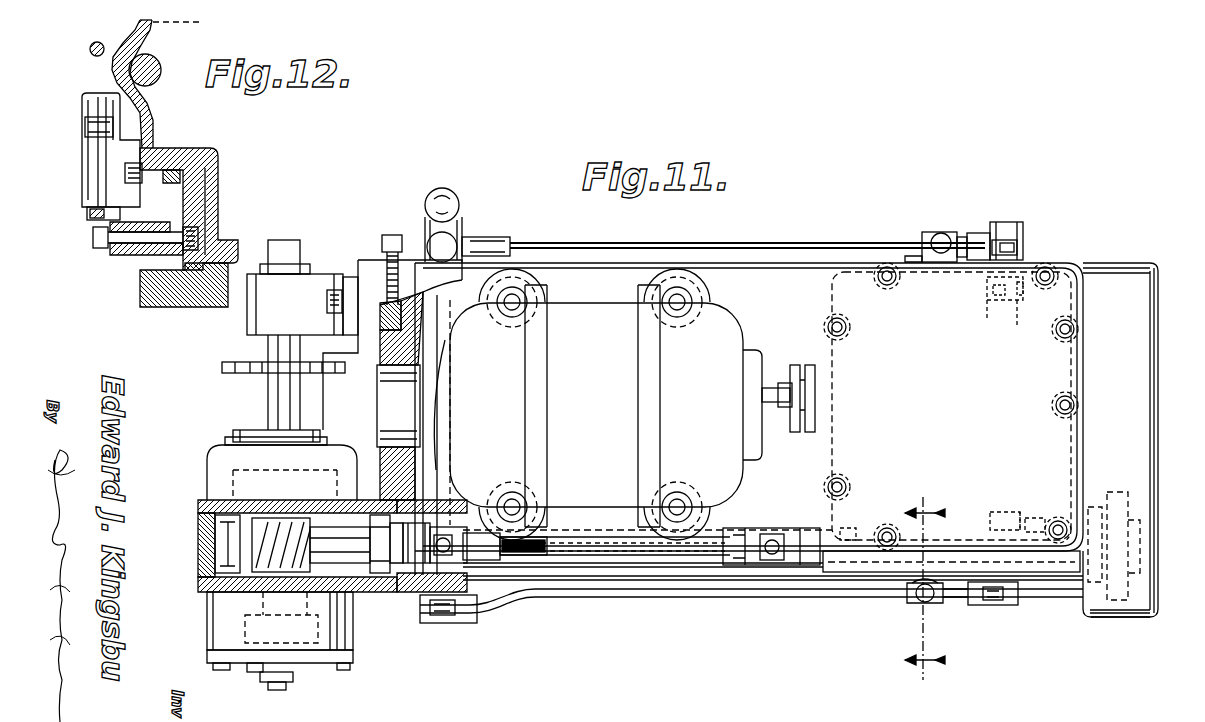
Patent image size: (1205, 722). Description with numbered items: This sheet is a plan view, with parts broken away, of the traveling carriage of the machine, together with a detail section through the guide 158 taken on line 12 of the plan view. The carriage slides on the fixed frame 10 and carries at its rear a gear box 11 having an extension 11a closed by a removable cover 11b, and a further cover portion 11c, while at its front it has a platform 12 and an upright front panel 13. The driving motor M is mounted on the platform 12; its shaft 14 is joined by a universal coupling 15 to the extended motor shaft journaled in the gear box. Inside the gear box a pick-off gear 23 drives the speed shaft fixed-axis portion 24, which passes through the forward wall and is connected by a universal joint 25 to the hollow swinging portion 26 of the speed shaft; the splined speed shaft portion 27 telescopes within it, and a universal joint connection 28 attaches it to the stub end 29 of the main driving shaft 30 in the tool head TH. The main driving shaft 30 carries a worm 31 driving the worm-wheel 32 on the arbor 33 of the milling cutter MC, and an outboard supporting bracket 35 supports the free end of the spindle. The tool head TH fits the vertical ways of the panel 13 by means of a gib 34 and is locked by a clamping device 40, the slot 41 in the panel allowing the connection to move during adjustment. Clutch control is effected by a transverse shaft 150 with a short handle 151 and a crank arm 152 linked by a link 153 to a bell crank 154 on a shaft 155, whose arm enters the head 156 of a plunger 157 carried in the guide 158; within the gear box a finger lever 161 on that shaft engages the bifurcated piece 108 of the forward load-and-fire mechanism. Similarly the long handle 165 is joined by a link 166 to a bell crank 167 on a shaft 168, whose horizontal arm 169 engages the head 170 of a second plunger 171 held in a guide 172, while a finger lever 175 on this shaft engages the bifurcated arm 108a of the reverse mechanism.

In FIG. 12, the fixed frame 10 is at (185, 285).
In FIG. 12, the gear box 11 is at (220, 160).
In FIG. 11, the extension of the gear box 11a is at (1118, 286).
In FIG. 11, the removable cover 11b is at (1150, 478).
In FIG. 11, the cover plate 11c is at (1048, 436).
In FIG. 11, the platform 12 is at (925, 590).
In FIG. 11, the upright front panel 13 is at (418, 278).
In FIG. 11, the shaft 14 is at (769, 412).
In FIG. 11, the universal coupling 15 is at (808, 366).
In FIG. 11, the pick-off gear 23 is at (1112, 614).
In FIG. 12, the speed shaft fixed-axis portion 24 is at (153, 83).
In FIG. 11, the speed shaft fixed-axis portion 24 is at (850, 535).
In FIG. 11, the universal joint 25 is at (783, 566).
In FIG. 11, the hollow swinging portion of the speed shaft 26 is at (612, 535).
In FIG. 11, the speed shaft portion 27 is at (547, 535).
In FIG. 11, the universal joint connection 28 is at (470, 580).
In FIG. 11, the stub end 29 is at (386, 575).
In FIG. 11, the main driving shaft 30 is at (362, 566).
In FIG. 11, the worm 31 is at (262, 560).
In FIG. 11, the worm-wheel 32 is at (199, 556).
In FIG. 11, the arbor 33 is at (270, 394).
In FIG. 11, the gib 34 is at (388, 303).
In FIG. 11, the outboard supporting bracket 35 is at (272, 306).
In FIG. 11, the clamping device 40 is at (390, 234).
In FIG. 11, the slot 41 is at (414, 578).
In FIG. 11, the bifurcated piece 108 is at (1020, 510).
In FIG. 11, the bifurcated arm 108a is at (987, 310).
In FIG. 11, the transverse shaft 150 is at (435, 472).
In FIG. 11, the short handle 151 is at (450, 200).
In FIG. 11, the crank arm 152 is at (440, 623).
In FIG. 12, the link 153 is at (90, 49).
In FIG. 11, the link 153 is at (572, 594).
In FIG. 11, the bell crank 154 is at (1015, 606).
In FIG. 11, the shaft 155 is at (1008, 512).
In FIG. 12, the head 156 is at (100, 120).
In FIG. 11, the head 156 is at (942, 605).
In FIG. 12, the plunger 157 is at (95, 152).
In FIG. 11, the plunger 157 is at (918, 606).
In FIG. 12, the guide 158 is at (85, 183).
In FIG. 11, the guide 158 is at (912, 603).
In FIG. 11, the finger lever 161 is at (1035, 516).
In FIG. 11, the long handle 165 is at (458, 242).
In FIG. 11, the link 166 is at (680, 247).
In FIG. 11, the bell crank 167 is at (1016, 248).
In FIG. 11, the shaft 168 is at (1005, 222).
In FIG. 11, the horizontal arm 169 is at (980, 238).
In FIG. 11, the head 170 is at (962, 237).
In FIG. 11, the second plunger 171 is at (943, 236).
In FIG. 11, the guide 172 is at (924, 236).
In FIG. 11, the finger lever 175 is at (1018, 302).
In FIG. 11, the driving motor M is at (707, 345).
In FIG. 11, the milling cutter MC is at (222, 367).
In FIG. 11, the tool head TH is at (370, 302).